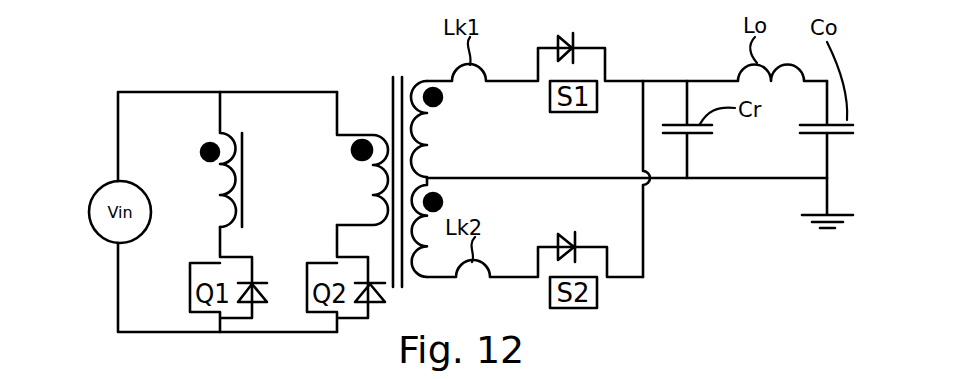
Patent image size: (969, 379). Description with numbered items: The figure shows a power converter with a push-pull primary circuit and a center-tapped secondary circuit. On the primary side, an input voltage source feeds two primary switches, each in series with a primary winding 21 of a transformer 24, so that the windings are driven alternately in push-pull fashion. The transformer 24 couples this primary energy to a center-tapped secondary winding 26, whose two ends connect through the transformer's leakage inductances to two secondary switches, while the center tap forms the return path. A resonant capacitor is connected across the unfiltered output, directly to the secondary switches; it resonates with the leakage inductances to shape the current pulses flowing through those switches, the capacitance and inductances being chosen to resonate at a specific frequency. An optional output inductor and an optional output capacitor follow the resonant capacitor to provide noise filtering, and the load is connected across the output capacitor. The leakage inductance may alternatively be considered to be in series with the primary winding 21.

The primary winding 21 is at (218, 191).
The transformer 24 is at (392, 108).
The center-tapped secondary winding 26 is at (428, 176).